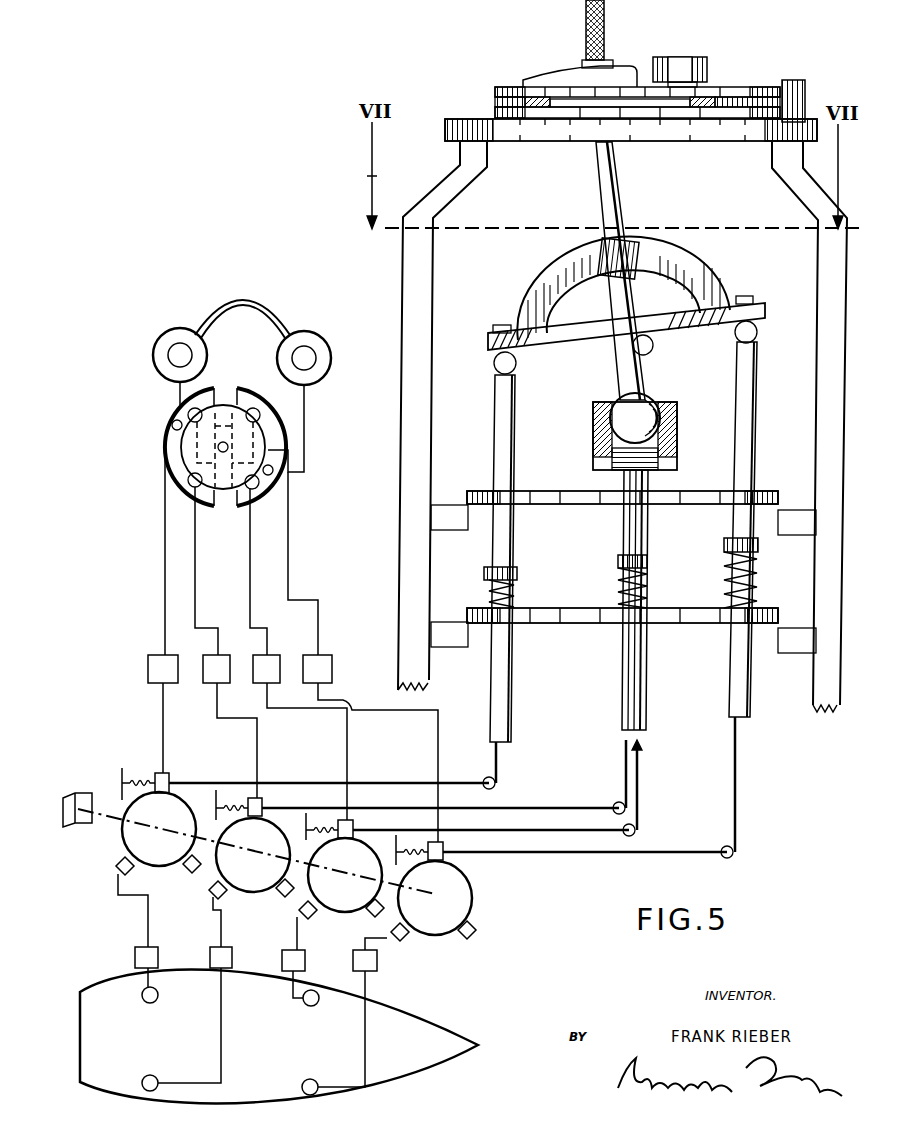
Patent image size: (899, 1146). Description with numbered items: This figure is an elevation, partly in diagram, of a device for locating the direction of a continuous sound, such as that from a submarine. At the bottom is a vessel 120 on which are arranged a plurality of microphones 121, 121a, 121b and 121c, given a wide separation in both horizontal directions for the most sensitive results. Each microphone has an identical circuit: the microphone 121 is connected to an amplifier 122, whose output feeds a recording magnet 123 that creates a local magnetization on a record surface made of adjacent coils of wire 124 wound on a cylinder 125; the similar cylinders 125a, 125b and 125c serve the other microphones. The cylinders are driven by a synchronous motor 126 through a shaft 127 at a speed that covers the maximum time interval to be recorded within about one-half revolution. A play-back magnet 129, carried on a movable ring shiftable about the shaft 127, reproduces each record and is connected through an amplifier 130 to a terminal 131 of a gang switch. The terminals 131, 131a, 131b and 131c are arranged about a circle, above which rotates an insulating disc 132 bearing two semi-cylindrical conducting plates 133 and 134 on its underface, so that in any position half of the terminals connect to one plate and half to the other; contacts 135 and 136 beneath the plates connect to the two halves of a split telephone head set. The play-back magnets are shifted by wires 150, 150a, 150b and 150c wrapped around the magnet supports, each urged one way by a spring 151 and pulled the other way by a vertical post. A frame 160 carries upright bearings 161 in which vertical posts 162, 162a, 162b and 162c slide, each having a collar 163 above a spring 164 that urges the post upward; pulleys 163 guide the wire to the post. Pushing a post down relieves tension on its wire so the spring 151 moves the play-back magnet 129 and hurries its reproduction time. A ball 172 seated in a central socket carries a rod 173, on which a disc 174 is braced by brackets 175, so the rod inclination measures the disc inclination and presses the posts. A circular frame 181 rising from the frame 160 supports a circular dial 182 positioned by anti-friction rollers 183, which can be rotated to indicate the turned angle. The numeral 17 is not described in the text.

The bearing block 17 is at (678, 436).
The vessel 120 is at (425, 1075).
The microphone 121 is at (155, 998).
The microphone 121a is at (158, 1076).
The microphone 121b is at (310, 1079).
The microphone 121c is at (306, 1005).
The amplifier 122 is at (196, 938).
The recording magnet 123 is at (118, 868).
The coils of wire 124 is at (124, 848).
The cylinder 125 is at (150, 866).
The cylinder 125a is at (282, 892).
The cylinder 125b is at (418, 933).
The cylinder 125c is at (362, 910).
The synchronous motor 126 is at (102, 778).
The shaft 127 is at (182, 820).
The play-back magnet 129 is at (198, 766).
The amplifier 130 is at (148, 666).
The terminal 131 is at (180, 405).
The terminal 131a is at (202, 487).
The terminal 131b is at (256, 489).
The terminal 131c is at (290, 403).
The insulating disc 132 is at (225, 410).
The conducting plate 133 is at (172, 478).
The conducting plate 134 is at (282, 432).
The contact 135 is at (172, 430).
The contact 136 is at (275, 478).
The wire 150 is at (472, 772).
The wire 150a is at (550, 809).
The wire 150b is at (768, 800).
The wire 150c is at (672, 815).
The spring 151 is at (130, 780).
The frame 160 is at (812, 672).
The upright bearing 161 is at (515, 510).
The vertical post 162 is at (514, 446).
The vertical post 162a is at (624, 698).
The vertical post 162b is at (800, 420).
The vertical post 162c is at (650, 675).
The collar 163 is at (520, 574).
The spring 164 is at (758, 582).
The ball 172 is at (695, 392).
The rod 173 is at (628, 200).
The disc 174 is at (762, 312).
The bracket 175 is at (735, 258).
The circular frame 181 is at (818, 140).
The circular dial 182 is at (500, 90).
The anti-friction roller 183 is at (728, 110).